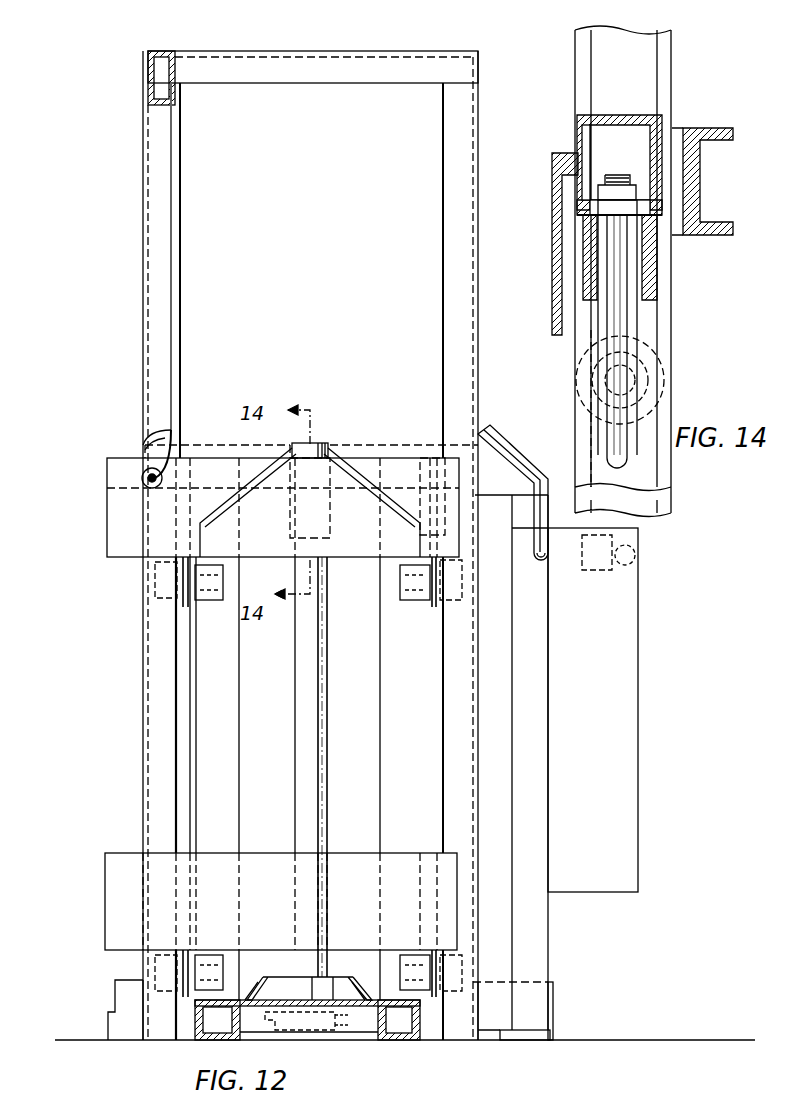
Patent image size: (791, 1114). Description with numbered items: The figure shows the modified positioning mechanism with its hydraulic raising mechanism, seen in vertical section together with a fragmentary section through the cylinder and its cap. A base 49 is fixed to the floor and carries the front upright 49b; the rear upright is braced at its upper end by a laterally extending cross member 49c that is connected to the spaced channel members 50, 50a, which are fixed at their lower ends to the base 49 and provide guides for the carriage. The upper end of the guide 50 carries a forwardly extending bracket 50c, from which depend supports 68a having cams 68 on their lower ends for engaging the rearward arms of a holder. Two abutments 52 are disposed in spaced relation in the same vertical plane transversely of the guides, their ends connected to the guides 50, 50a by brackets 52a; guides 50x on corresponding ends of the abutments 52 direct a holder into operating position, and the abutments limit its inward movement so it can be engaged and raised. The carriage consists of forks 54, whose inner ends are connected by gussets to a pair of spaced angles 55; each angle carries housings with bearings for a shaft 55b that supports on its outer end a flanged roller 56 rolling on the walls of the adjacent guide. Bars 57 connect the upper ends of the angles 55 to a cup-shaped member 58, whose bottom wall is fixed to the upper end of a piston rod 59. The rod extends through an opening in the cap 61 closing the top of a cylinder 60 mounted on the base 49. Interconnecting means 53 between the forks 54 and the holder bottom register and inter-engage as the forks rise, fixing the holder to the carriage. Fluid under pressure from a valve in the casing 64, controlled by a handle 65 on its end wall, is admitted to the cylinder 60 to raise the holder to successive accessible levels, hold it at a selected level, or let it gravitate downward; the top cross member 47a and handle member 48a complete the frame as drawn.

In FIG. 12, the top cross member 47a is at (405, 70).
In FIG. 12, the forwardly extending bracket 50c is at (150, 90).
In FIG. 12, the channel member 50 is at (180, 328).
In FIG. 12, the support 68a is at (145, 488).
In FIG. 12, the cam 68 is at (150, 466).
In FIG. 12, the channel member 50a is at (490, 1060).
In FIG. 12, the guide 50x is at (100, 890).
In FIG. 12, the cross member 49c is at (393, 450).
In FIG. 14, the cross member 49c is at (728, 128).
In FIG. 12, the cup-shaped member 58 is at (320, 440).
In FIG. 14, the cup-shaped member 58 is at (628, 125).
In FIG. 12, the bar 57 is at (326, 455).
In FIG. 12, the abutment 52 is at (345, 555).
In FIG. 14, the abutment 52 is at (583, 280).
In FIG. 12, the flanged roller 56 is at (160, 598).
In FIG. 12, the shaft 55b is at (210, 595).
In FIG. 12, the angle 55 is at (232, 750).
In FIG. 12, the cylinder 60 is at (315, 688).
In FIG. 14, the cylinder 60 is at (648, 395).
In FIG. 12, the interconnecting means 53 is at (250, 975).
In FIG. 12, the fork 54 is at (198, 1040).
In FIG. 12, the handle 48a is at (512, 448).
In FIG. 12, the base 49 is at (458, 1040).
In FIG. 12, the front upright 49b is at (548, 935).
In FIG. 12, the casing 64 is at (608, 892).
In FIG. 12, the handle 65 is at (636, 560).
In FIG. 14, the bracket 52a is at (565, 160).
In FIG. 14, the cap 61 is at (582, 228).
In FIG. 14, the piston rod 59 is at (625, 312).